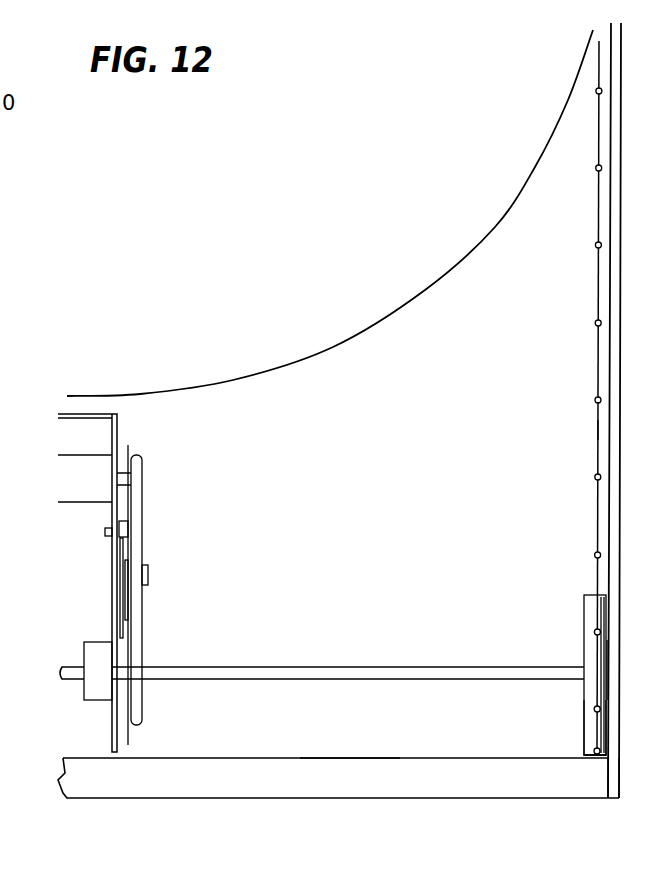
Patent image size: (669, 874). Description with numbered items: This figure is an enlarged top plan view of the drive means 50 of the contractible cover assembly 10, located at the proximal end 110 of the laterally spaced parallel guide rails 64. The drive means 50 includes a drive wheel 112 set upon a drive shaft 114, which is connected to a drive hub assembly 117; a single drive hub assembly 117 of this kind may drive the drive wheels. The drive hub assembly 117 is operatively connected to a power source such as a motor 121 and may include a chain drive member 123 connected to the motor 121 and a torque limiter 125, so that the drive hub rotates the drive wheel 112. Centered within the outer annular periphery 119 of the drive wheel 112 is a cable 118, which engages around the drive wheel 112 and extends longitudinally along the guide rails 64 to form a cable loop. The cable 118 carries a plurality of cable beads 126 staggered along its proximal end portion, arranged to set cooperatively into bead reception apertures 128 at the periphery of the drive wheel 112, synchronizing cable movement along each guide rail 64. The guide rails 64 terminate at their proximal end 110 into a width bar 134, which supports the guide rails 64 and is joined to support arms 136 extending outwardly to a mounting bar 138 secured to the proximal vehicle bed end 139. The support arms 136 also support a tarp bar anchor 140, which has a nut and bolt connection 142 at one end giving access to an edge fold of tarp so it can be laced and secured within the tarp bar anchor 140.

The contractible cover assembly 10 is at (638, 296).
The drive means 50 is at (343, 808).
The guide rails 64 is at (622, 135).
The proximal end 110 is at (620, 777).
The drive wheel 112 is at (582, 707).
The drive shaft 114 is at (383, 667).
The drive hub assembly 117 is at (178, 453).
The cable 118 is at (598, 428).
The outer annular periphery 119 is at (590, 613).
The motor 121 is at (148, 582).
The chain drive member 123 is at (135, 705).
The torque limiter 125 is at (120, 581).
The cable beads 126 is at (601, 323).
The bead reception apertures 128 is at (607, 753).
The width bar 134 is at (537, 780).
The support arms 136 is at (107, 508).
The mounting bar 138 is at (88, 423).
The proximal vehicle bed end 139 is at (407, 305).
The tarp bar anchor 140 is at (88, 458).
The nut and bolt connection 142 is at (123, 473).